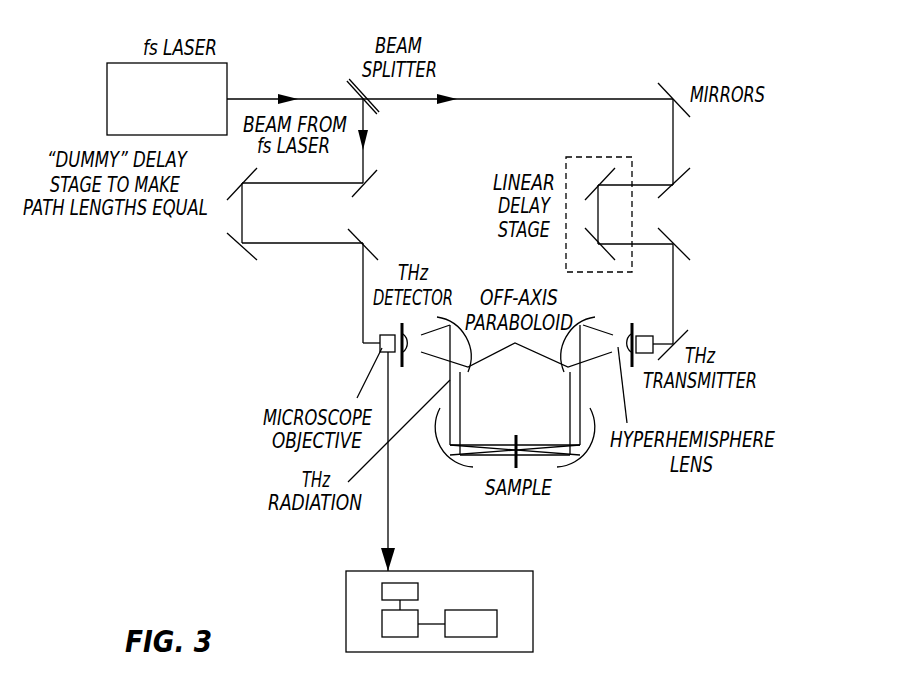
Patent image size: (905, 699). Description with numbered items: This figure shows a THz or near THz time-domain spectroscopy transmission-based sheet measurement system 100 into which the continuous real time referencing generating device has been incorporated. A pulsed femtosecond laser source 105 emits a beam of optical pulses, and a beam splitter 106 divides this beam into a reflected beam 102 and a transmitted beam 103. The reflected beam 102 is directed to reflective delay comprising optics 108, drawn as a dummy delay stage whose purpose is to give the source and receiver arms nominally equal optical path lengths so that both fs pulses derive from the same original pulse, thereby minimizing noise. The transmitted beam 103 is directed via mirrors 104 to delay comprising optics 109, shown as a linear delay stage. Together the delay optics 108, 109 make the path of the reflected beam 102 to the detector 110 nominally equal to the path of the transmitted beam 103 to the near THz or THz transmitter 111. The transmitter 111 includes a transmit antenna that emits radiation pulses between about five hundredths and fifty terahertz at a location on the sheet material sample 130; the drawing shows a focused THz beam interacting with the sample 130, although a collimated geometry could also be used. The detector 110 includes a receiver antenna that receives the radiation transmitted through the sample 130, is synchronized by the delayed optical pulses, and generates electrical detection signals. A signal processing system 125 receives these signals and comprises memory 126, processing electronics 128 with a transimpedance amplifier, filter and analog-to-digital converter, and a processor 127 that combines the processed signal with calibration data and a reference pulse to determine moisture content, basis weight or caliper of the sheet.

The THz-TDS transmission-based sheet measurement system 100 is at (648, 623).
The reflected beam 102 is at (363, 163).
The transmitted beam 103 is at (480, 98).
The mirrors 104 is at (663, 88).
The pulsed laser source 105 is at (128, 63).
The beam splitter 106 is at (348, 80).
The delay comprising optics 108 is at (212, 226).
The delay comprising optics 109 is at (672, 218).
The detector 110 is at (363, 300).
The near THz or THz transmitter 111 is at (637, 332).
The signal processing system 125 is at (478, 570).
The memory 126 is at (497, 627).
The processor 127 is at (382, 632).
The processing electronics 128 is at (382, 592).
The sample 130 is at (517, 435).